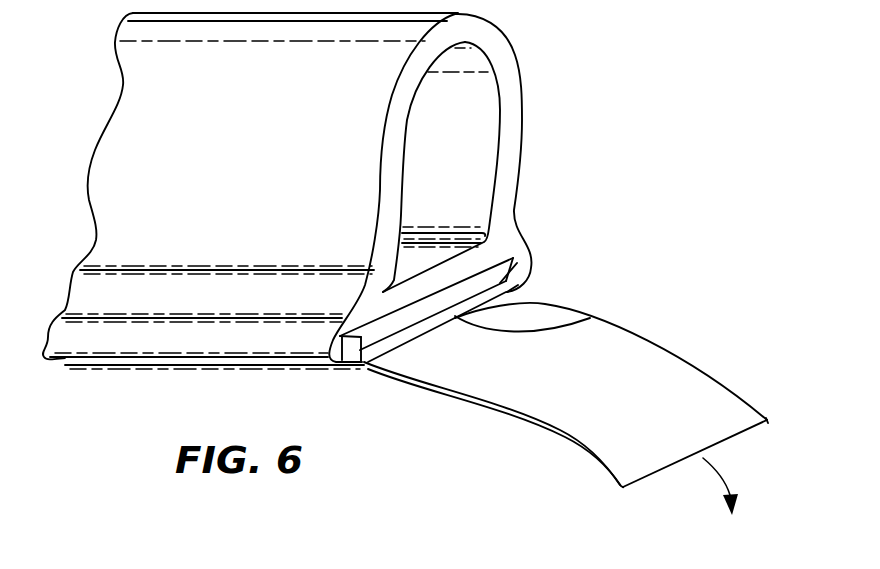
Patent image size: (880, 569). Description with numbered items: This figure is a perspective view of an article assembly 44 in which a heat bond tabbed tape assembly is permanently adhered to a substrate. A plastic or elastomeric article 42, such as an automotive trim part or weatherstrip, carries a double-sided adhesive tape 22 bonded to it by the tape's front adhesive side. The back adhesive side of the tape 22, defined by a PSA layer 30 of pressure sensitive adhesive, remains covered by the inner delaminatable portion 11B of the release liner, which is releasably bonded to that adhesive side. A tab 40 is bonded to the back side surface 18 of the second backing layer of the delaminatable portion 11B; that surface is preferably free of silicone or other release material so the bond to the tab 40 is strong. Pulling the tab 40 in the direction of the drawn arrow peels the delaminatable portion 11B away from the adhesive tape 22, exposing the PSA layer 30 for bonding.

The plastic or elastomeric article 42 is at (507, 57).
The article assembly 44 is at (636, 122).
The PSA layer 30 is at (485, 280).
The second back side surface 18 is at (586, 319).
The tab 40 is at (687, 367).
The double-sided adhesive tape 22 is at (367, 368).
The inner delaminatable portion 11B is at (397, 340).